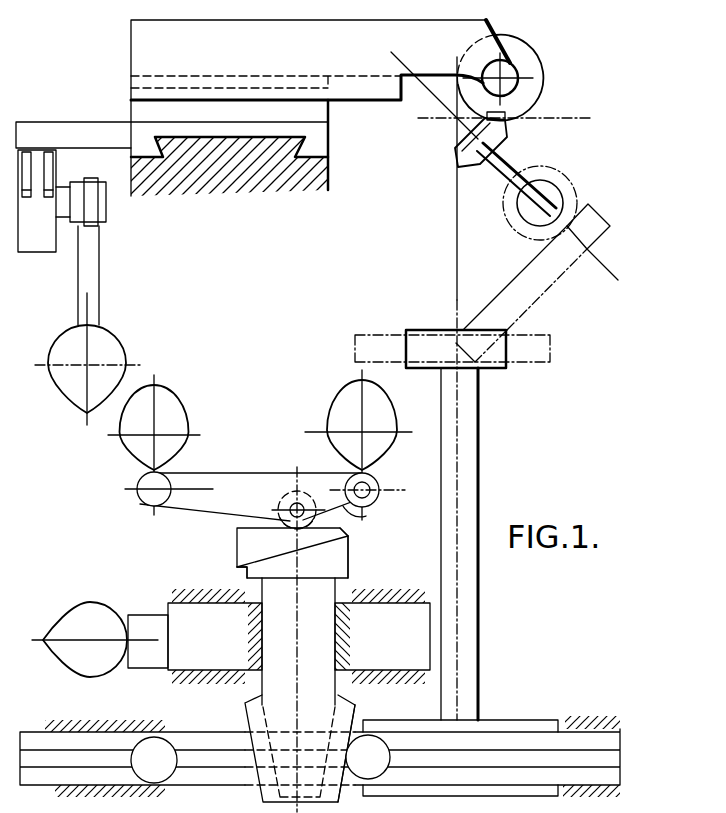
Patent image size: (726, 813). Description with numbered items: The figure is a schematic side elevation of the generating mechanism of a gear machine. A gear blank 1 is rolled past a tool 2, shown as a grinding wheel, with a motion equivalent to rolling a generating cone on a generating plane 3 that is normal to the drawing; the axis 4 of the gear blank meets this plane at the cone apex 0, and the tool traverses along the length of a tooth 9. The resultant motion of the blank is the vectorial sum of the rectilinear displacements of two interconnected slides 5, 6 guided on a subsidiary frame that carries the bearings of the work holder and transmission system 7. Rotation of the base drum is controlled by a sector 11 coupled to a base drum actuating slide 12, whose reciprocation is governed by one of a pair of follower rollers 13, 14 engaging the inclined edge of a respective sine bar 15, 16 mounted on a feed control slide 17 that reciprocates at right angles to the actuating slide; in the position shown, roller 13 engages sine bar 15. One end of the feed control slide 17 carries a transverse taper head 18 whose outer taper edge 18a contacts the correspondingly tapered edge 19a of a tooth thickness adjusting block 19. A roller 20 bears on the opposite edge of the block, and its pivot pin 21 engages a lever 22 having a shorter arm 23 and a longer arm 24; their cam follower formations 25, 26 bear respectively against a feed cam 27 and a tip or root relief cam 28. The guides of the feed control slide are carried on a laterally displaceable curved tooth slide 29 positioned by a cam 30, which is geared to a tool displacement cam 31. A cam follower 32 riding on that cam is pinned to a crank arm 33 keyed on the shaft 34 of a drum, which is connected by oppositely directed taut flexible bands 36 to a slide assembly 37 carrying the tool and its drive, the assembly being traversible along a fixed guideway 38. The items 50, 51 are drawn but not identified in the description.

The cone apex 0 is at (457, 118).
The gear blank 1 is at (477, 168).
The tool 2 is at (529, 66).
The generating plane 3 is at (503, 118).
The axis of the gear blank 4 is at (617, 280).
The slide 5 is at (551, 347).
The slide 6 is at (551, 276).
The work holder and transmission system 7 is at (562, 184).
The tooth 9 is at (505, 112).
The sector 11 is at (522, 722).
The base drum actuating slide 12 is at (30, 733).
The follower roller 13 is at (363, 773).
The follower roller 14 is at (166, 751).
The sine bar 15 is at (356, 712).
The sine bar 16 is at (249, 712).
The feed control slide 17 is at (321, 661).
The taper head 18 is at (351, 565).
The outer taper edge 18a is at (341, 533).
The tooth thickness adjusting block 19 is at (237, 541).
The tapered edge 19a is at (244, 566).
The roller 20 is at (290, 527).
The pivot pin 21 is at (286, 504).
The lever 22 is at (225, 478).
The shorter arm 23 is at (370, 520).
The longer arm 24 is at (212, 516).
The cam follower formation 25 is at (379, 484).
The cam follower formation 26 is at (150, 500).
The feed cam 27 is at (335, 406).
The tip or root relief cam 28 is at (176, 409).
The curved tooth slide 29 is at (141, 616).
The cam 30 is at (88, 608).
The tool displacement cam 31 is at (114, 349).
The cam follower 32 is at (99, 270).
The crank arm 33 is at (106, 215).
The shaft 34 is at (91, 190).
The taut flexible bands 36 is at (48, 177).
The slide assembly 37 is at (75, 99).
The fixed guideway 38 is at (282, 166).
The rail 50 is at (132, 103).
The carrier 51 is at (28, 124).